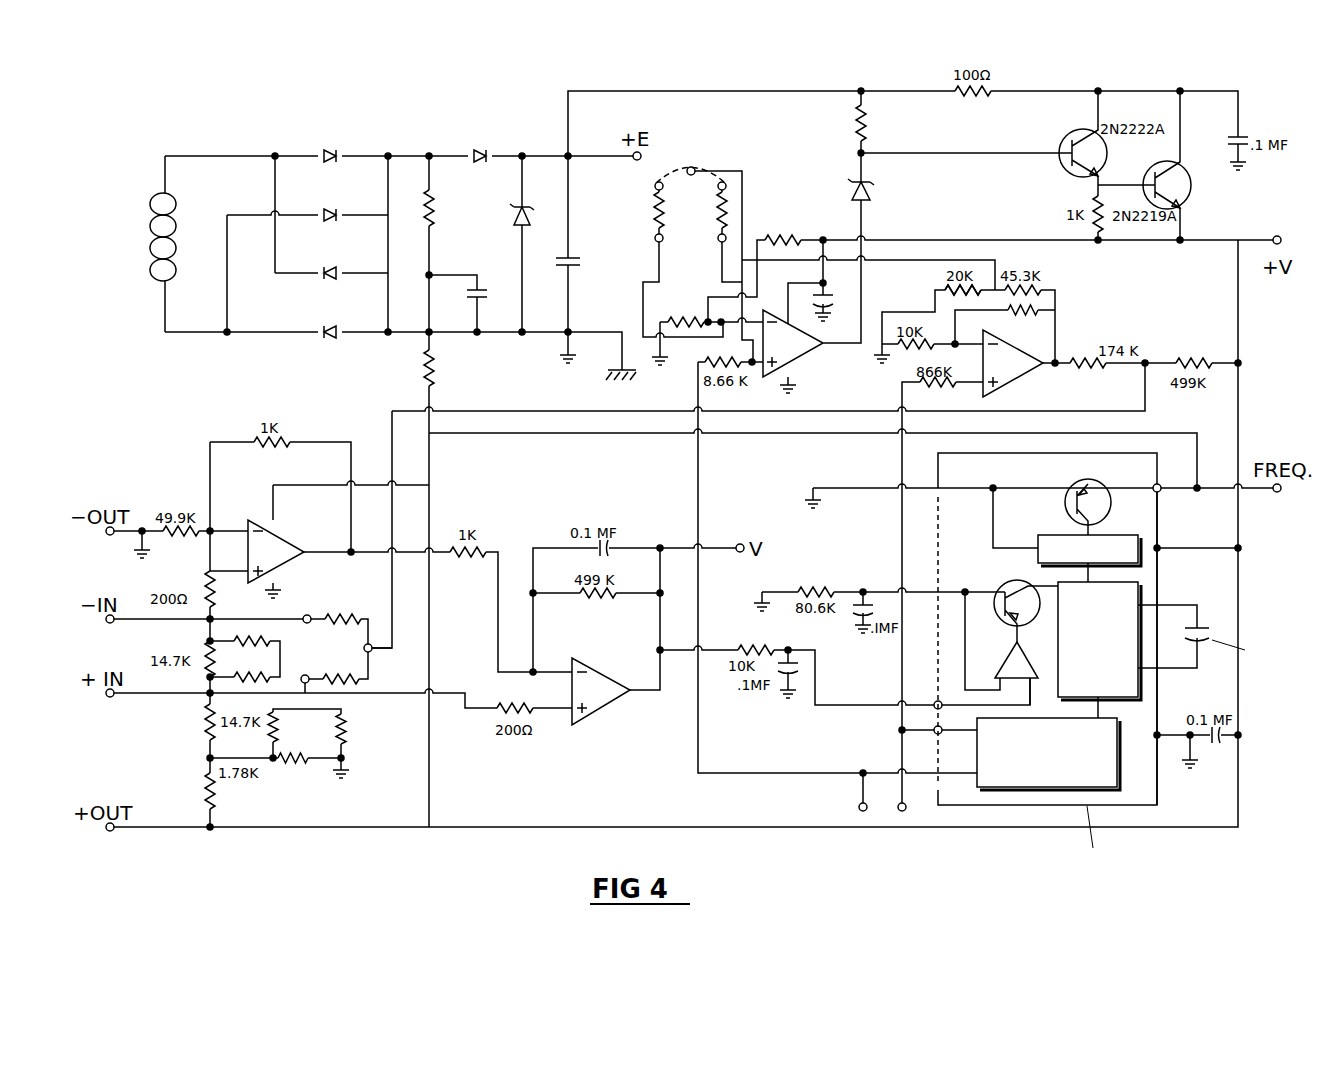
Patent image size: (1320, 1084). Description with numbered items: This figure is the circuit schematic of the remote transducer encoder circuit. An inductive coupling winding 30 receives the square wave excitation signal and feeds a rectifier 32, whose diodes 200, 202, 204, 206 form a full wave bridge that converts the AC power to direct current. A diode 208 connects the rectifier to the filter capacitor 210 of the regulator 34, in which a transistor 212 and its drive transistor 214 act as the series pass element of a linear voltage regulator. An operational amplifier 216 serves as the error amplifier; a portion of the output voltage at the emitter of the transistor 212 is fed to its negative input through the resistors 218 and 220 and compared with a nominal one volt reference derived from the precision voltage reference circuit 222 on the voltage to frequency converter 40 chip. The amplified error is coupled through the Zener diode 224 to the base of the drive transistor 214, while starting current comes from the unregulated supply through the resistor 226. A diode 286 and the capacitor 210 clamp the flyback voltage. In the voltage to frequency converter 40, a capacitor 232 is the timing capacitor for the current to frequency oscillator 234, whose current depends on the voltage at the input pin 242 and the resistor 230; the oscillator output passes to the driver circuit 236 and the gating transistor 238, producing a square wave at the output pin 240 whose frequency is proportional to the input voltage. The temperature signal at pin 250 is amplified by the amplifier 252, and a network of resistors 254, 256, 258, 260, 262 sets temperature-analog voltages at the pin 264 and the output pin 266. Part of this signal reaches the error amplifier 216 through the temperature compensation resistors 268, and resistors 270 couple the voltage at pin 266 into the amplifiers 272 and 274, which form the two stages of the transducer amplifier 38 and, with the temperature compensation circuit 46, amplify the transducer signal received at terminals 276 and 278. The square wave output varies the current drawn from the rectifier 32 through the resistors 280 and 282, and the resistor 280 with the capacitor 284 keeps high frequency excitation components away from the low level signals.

The inductive coupling winding 30 is at (132, 232).
The rectifier 32 is at (459, 131).
The regulator 34 is at (559, 87).
The transducer amplifier 38 is at (618, 721).
The voltage to frequency converter 40 is at (924, 476).
The temperature compensation circuit 46 is at (716, 240).
The diode 200 is at (334, 147).
The diode 202 is at (336, 208).
The diode 204 is at (335, 265).
The diode 206 is at (330, 325).
The diode 208 is at (485, 147).
The filter capacitor 210 is at (572, 258).
The transistor 212 is at (1192, 195).
The drive transistor 214 is at (1062, 140).
The operational amplifier 216 is at (811, 351).
The resistor 218 is at (686, 312).
The resistor 220 is at (790, 235).
The precision voltage reference circuit 222 is at (1118, 783).
The Zener diode 224 is at (855, 188).
The resistor 226 is at (876, 128).
The resistor 230 is at (803, 588).
The capacitor 232 is at (1205, 630).
The current to frequency oscillator 234 is at (1140, 684).
The driver circuit 236 is at (1062, 535).
The gating transistor 238 is at (1112, 510).
The output pin 240 is at (1160, 492).
The input pin 242 is at (935, 703).
The pin 250 is at (934, 730).
The amplifier 252 is at (1010, 395).
The resistor 254 is at (901, 351).
The resistor 256 is at (940, 287).
The resistor 258 is at (1043, 290).
The resistor 260 is at (1093, 360).
The resistor 262 is at (1193, 360).
The pin 264 is at (691, 166).
The output pin 266 is at (373, 651).
The temperature compensation resistors 268 is at (658, 224).
The resistors 270 is at (352, 677).
The amplifier 272 is at (270, 531).
The amplifier 274 is at (601, 667).
The terminal 276 is at (110, 623).
The terminal 278 is at (110, 698).
The resistor 280 is at (440, 216).
The resistor 282 is at (420, 368).
The capacitor 284 is at (470, 300).
The diode 286 is at (535, 212).